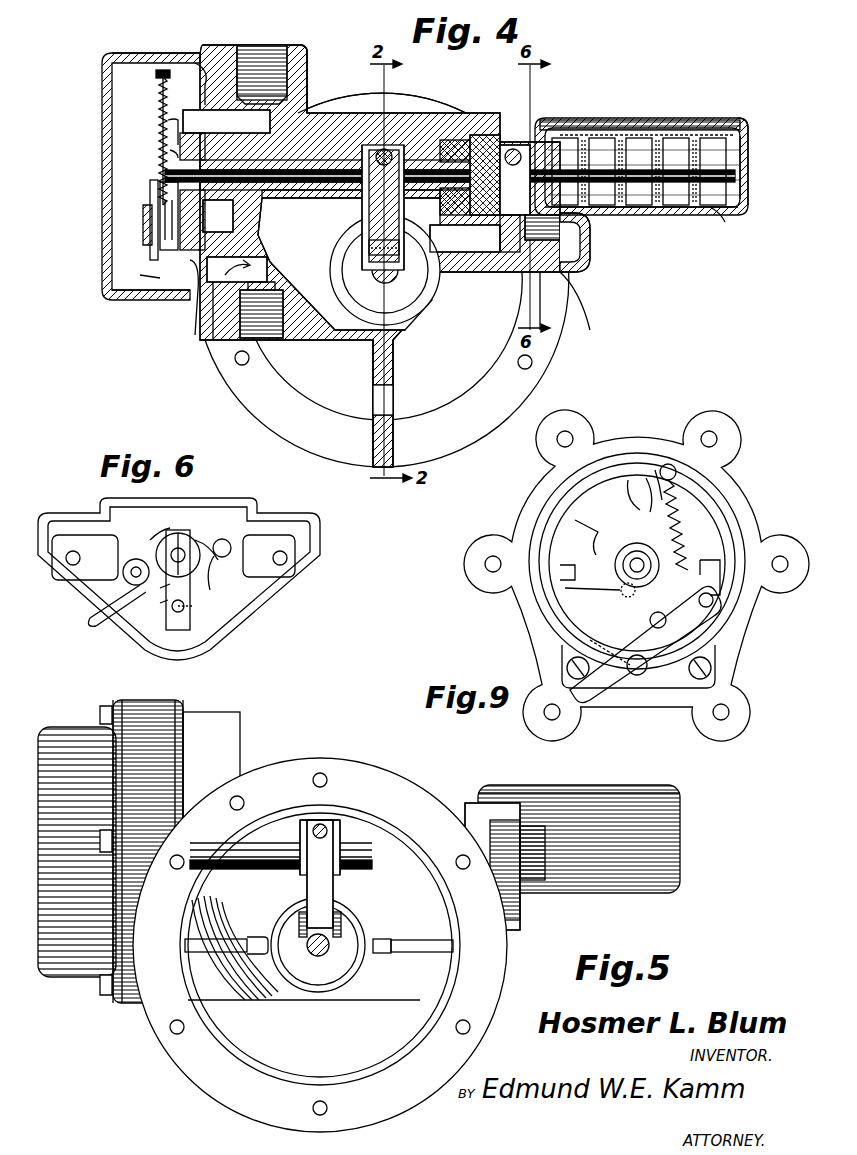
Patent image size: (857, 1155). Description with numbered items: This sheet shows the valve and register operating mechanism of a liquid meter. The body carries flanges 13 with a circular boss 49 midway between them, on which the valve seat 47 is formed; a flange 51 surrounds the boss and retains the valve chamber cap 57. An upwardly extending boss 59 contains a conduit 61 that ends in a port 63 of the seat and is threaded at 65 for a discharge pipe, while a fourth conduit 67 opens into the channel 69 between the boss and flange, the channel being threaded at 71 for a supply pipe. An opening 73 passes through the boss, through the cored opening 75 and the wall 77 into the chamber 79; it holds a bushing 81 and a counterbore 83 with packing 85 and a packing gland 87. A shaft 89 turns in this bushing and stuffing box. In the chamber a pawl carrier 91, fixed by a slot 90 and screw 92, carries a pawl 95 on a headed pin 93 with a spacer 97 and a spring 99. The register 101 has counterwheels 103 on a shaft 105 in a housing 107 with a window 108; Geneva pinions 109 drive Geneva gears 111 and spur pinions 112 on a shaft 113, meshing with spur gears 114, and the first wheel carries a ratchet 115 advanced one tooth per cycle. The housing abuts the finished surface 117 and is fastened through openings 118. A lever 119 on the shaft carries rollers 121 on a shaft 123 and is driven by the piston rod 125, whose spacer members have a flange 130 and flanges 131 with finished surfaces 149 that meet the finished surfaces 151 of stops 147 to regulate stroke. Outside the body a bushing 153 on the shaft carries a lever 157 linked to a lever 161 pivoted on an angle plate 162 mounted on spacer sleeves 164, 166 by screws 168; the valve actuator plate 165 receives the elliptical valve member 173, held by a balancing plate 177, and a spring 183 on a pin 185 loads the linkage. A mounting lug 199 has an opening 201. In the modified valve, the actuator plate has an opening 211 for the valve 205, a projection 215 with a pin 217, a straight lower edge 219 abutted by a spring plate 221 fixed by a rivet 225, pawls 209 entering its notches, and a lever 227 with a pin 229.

In FIG. 5, the flanges 13 is at (173, 1062).
In FIG. 4, the valve seat 47 is at (158, 96).
In FIG. 9, the valve seat 47 is at (616, 560).
In FIG. 4, the circular boss 49 is at (200, 63).
In FIG. 4, the flange 51 is at (203, 45).
In FIG. 9, the flange 51 is at (738, 488).
In FIG. 4, the valve chamber cap 57 is at (102, 112).
In FIG. 5, the valve chamber cap 57 is at (70, 985).
In FIG. 4, the upwardly extending boss 59 is at (307, 62).
In FIG. 4, the conduit 61 is at (307, 96).
In FIG. 4, the port 63 is at (252, 117).
In FIG. 4, the internal threads 65 is at (246, 48).
In FIG. 4, the fourth conduit 67 is at (213, 320).
In FIG. 4, the channel 69 is at (195, 305).
In FIG. 4, the threaded portion 71 is at (278, 338).
In FIG. 4, the opening 73 is at (290, 192).
In FIG. 4, the cored opening 75 is at (345, 240).
In FIG. 5, the cored opening 75 is at (235, 942).
In FIG. 4, the wall 77 is at (390, 150).
In FIG. 4, the chamber 79 is at (465, 238).
In FIG. 4, the bushing 81 is at (326, 192).
In FIG. 4, the counterbore 83 is at (478, 138).
In FIG. 4, the packing 85 is at (452, 140).
In FIG. 4, the packing gland 87 is at (505, 142).
In FIG. 4, the shaft 89 is at (290, 205).
In FIG. 6, the shaft 89 is at (212, 580).
In FIG. 6, the slot 90 is at (182, 540).
In FIG. 4, the pawl carrier 91 is at (499, 233).
In FIG. 6, the pawl carrier 91 is at (170, 630).
In FIG. 6, the screw 92 is at (172, 533).
In FIG. 4, the headed pin 93 is at (562, 236).
In FIG. 6, the headed pin 93 is at (190, 612).
In FIG. 4, the pawl 95 is at (590, 258).
In FIG. 6, the pawl 95 is at (160, 588).
In FIG. 4, the spacer 97 is at (575, 272).
In FIG. 6, the spacer 97 is at (172, 614).
In FIG. 6, the spring 99 is at (160, 604).
In FIG. 4, the register 101 is at (752, 164).
In FIG. 4, the counterwheels 103 is at (640, 138).
In FIG. 6, the counterwheels 103 is at (218, 560).
In FIG. 4, the shaft 105 is at (742, 182).
In FIG. 4, the register housing 107 is at (748, 205).
In FIG. 4, the window 108 is at (716, 120).
In FIG. 4, the Geneva pinions 109 is at (722, 228).
In FIG. 6, the Geneva gears 111 is at (90, 616).
In FIG. 6, the spur pinions 112 is at (134, 558).
In FIG. 6, the shaft 113 is at (92, 624).
In FIG. 4, the spur gears 114 is at (632, 215).
In FIG. 4, the ratchet 115 is at (560, 120).
In FIG. 6, the ratchet 115 is at (150, 535).
In FIG. 4, the finished surface 117 is at (572, 280).
In FIG. 6, the openings 118 is at (285, 562).
In FIG. 4, the lever 119 is at (369, 200).
In FIG. 5, the lever 119 is at (333, 880).
In FIG. 4, the rollers 121 is at (395, 280).
In FIG. 5, the rollers 121 is at (341, 914).
In FIG. 4, the shaft 123 is at (372, 254).
In FIG. 5, the piston rod 125 is at (315, 954).
In FIG. 5, the flange 130 is at (345, 932).
In FIG. 5, the flanges 131 is at (265, 920).
In FIG. 5, the stops 147 is at (382, 940).
In FIG. 5, the finished surfaces 149 is at (304, 886).
In FIG. 5, the finished surfaces 151 is at (392, 954).
In FIG. 4, the bushing 153 is at (178, 174).
In FIG. 9, the bushing 153 is at (625, 556).
In FIG. 4, the lever 157 is at (165, 216).
In FIG. 4, the lever 161 is at (150, 186).
In FIG. 4, the angle plate 162 is at (143, 240).
In FIG. 4, the spacer sleeves 164 is at (135, 303).
In FIG. 4, the valve actuator plate 165 is at (160, 110).
In FIG. 4, the spacer sleeves 166 is at (205, 282).
In FIG. 4, the screws 168 is at (140, 276).
In FIG. 4, the valve member 173 is at (165, 150).
In FIG. 4, the balancing plate 177 is at (162, 128).
In FIG. 4, the spring 183 is at (156, 74).
In FIG. 4, the pin 185 is at (165, 50).
In FIG. 4, the mounting lug 199 is at (394, 366).
In FIG. 4, the opening 201 is at (394, 400).
In FIG. 9, the valve 205 is at (628, 498).
In FIG. 9, the pawls 209 is at (720, 590).
In FIG. 9, the opening 211 is at (637, 484).
In FIG. 9, the projection 215 is at (658, 468).
In FIG. 9, the pin 217 is at (668, 464).
In FIG. 9, the lower edge 219 is at (560, 570).
In FIG. 9, the spring plate 221 is at (588, 538).
In FIG. 9, the rivet 225 is at (565, 588).
In FIG. 9, the lever 227 is at (600, 645).
In FIG. 9, the pin 229 is at (628, 676).